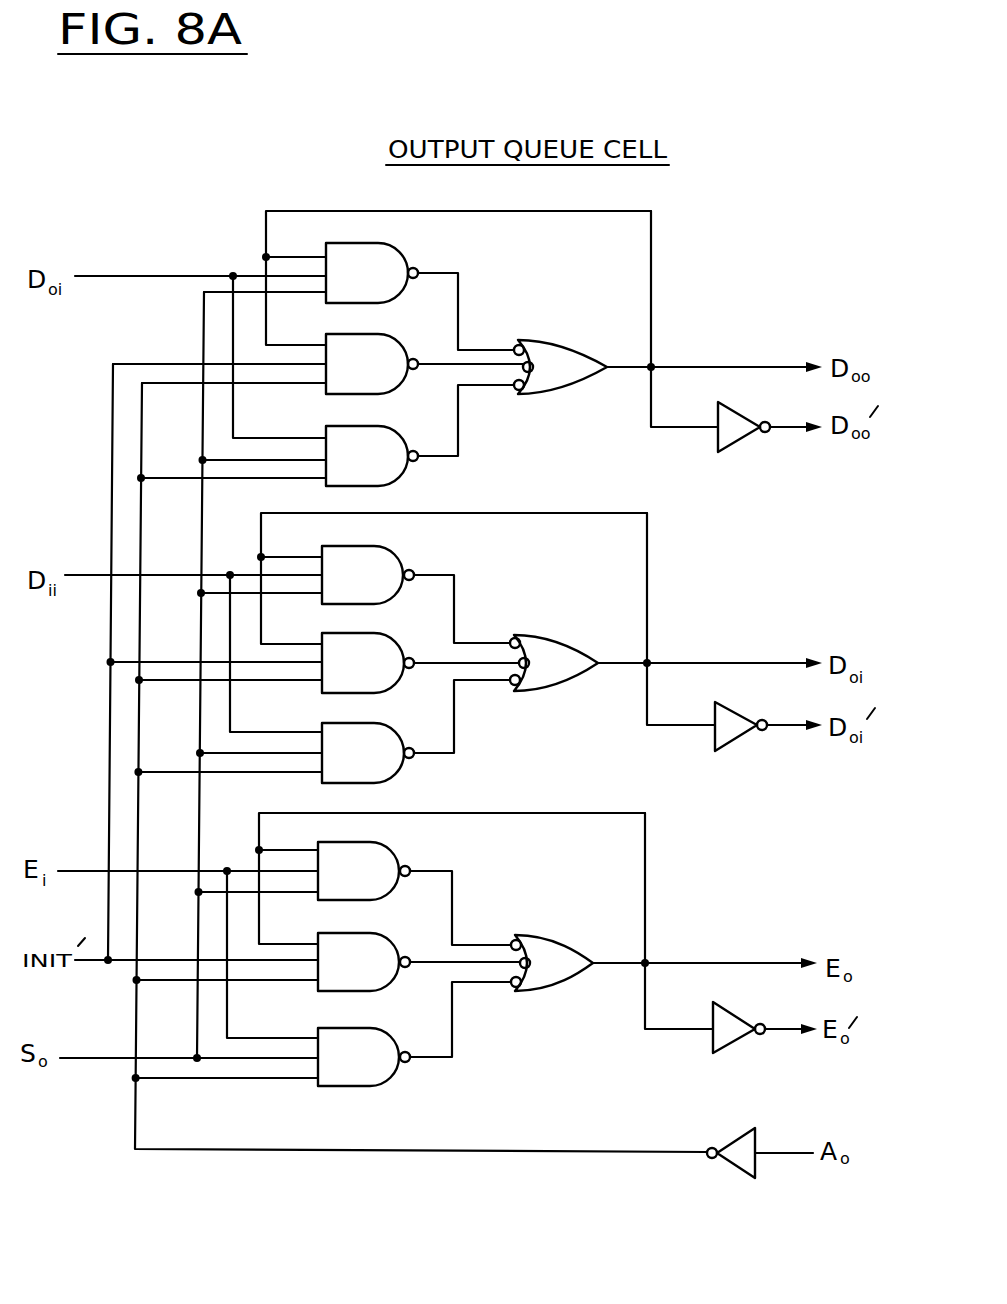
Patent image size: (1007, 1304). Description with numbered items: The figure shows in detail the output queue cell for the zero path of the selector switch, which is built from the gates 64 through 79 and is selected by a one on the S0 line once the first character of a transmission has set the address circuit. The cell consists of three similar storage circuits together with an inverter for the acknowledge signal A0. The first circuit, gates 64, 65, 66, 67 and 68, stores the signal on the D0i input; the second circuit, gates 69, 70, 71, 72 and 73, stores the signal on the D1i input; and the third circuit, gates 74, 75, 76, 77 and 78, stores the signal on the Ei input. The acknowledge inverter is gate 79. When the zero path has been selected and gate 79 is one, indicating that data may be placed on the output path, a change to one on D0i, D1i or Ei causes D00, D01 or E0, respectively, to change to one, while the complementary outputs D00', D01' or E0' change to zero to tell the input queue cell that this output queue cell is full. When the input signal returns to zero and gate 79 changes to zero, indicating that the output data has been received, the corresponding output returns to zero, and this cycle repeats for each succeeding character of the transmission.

The gate 64 is at (407, 255).
The gate 65 is at (403, 392).
The gate 66 is at (405, 468).
The gate 67 is at (545, 397).
The gate 68 is at (730, 443).
The gate 69 is at (404, 558).
The gate 70 is at (397, 680).
The gate 71 is at (400, 766).
The gate 72 is at (548, 692).
The gate 73 is at (728, 745).
The gate 74 is at (404, 857).
The gate 75 is at (372, 992).
The gate 76 is at (392, 1075).
The gate 77 is at (535, 993).
The gate 78 is at (740, 1042).
The gate 79 is at (735, 1165).